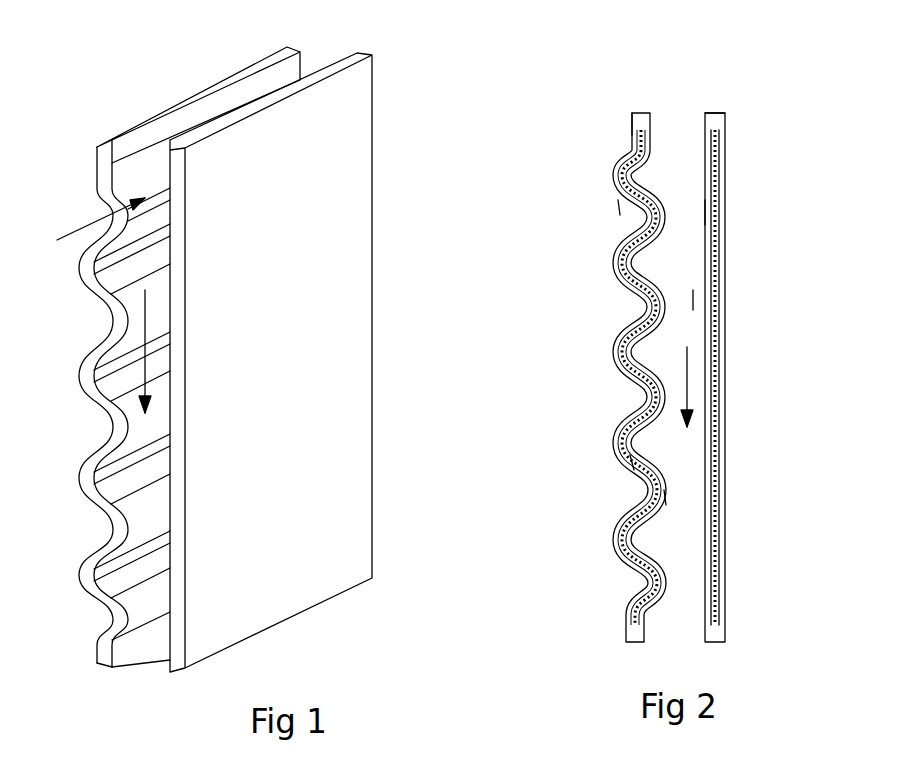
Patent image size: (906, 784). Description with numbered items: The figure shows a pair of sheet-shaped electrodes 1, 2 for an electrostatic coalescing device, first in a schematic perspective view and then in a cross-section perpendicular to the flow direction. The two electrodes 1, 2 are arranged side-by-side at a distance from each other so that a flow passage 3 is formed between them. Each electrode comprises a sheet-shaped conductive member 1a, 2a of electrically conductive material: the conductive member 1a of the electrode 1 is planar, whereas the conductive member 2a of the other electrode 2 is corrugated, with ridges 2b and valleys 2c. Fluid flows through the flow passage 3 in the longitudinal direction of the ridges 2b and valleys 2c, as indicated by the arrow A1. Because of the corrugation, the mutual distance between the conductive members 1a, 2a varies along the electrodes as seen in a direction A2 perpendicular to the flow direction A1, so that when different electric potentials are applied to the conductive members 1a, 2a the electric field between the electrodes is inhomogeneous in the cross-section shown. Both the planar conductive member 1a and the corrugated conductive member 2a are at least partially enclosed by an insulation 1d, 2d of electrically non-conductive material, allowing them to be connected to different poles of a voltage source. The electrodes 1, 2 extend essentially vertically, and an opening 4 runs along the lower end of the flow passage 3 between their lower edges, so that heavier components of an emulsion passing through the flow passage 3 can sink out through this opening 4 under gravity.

In FIG. 1, the electrode 1 is at (362, 100).
In FIG. 2, the electrode 1 is at (722, 75).
In FIG. 1, the electrode 2 is at (128, 147).
In FIG. 2, the electrode 2 is at (633, 98).
In FIG. 1, the flow passage 3 is at (113, 300).
In FIG. 2, the flow passage 3 is at (690, 300).
In FIG. 1, the opening 4 is at (140, 663).
In FIG. 1, the intended flow direction A1 is at (75, 228).
In FIG. 1, the direction perpendicular to the flow direction A2 is at (150, 326).
In FIG. 2, the direction perpendicular to the flow direction A2 is at (690, 383).
In FIG. 2, the conductive member 1a is at (722, 212).
In FIG. 2, the insulation 1d is at (727, 125).
In FIG. 2, the conductive member 2a is at (628, 202).
In FIG. 2, the ridges 2b is at (666, 498).
In FIG. 2, the valleys 2c is at (596, 470).
In FIG. 2, the insulation 2d is at (634, 121).